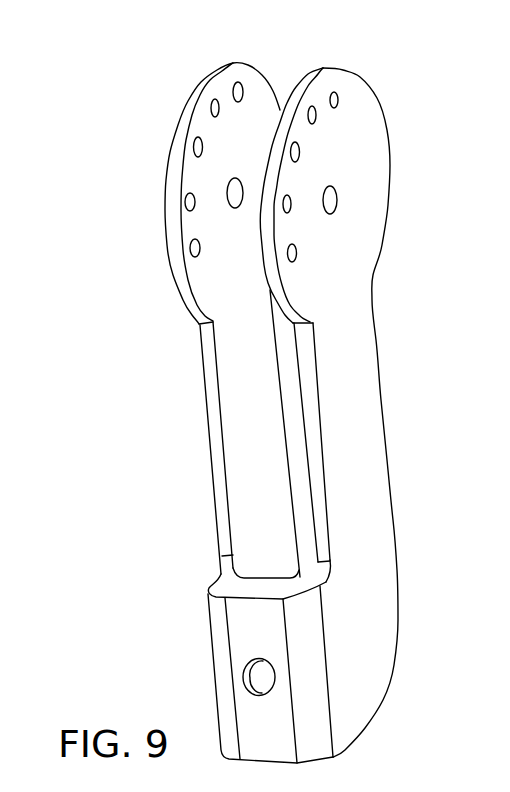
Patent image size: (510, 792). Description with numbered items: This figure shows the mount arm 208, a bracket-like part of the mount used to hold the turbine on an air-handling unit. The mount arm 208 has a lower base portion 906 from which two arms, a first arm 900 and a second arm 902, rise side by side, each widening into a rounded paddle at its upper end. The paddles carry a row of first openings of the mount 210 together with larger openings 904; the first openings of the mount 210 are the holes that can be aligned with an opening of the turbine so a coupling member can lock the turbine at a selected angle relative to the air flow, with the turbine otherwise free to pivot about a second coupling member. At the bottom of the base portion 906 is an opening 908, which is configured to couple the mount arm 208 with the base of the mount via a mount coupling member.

The mount arm 208 is at (249, 394).
The first openings of the mount 210 is at (285, 67).
The first arm 900 is at (197, 318).
The second arm 902 is at (350, 412).
The aperture 904 is at (271, 205).
The base 906 is at (231, 661).
The opening 908 is at (202, 683).